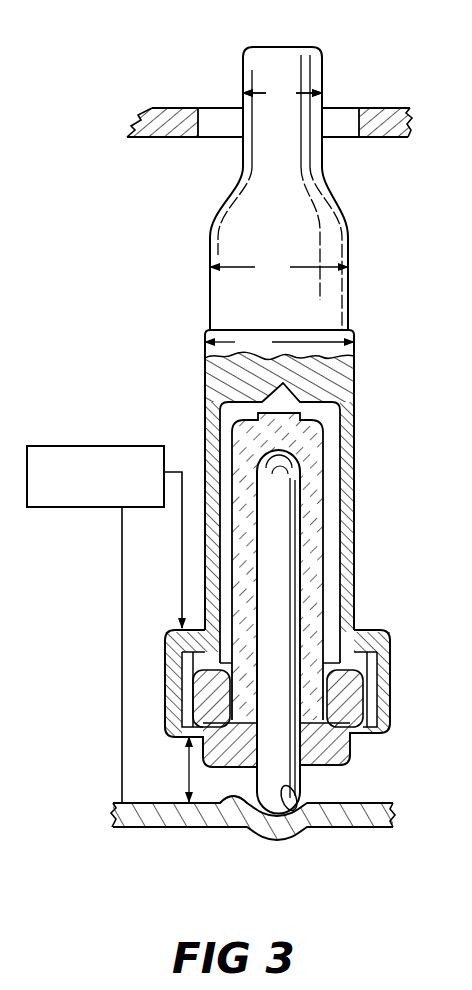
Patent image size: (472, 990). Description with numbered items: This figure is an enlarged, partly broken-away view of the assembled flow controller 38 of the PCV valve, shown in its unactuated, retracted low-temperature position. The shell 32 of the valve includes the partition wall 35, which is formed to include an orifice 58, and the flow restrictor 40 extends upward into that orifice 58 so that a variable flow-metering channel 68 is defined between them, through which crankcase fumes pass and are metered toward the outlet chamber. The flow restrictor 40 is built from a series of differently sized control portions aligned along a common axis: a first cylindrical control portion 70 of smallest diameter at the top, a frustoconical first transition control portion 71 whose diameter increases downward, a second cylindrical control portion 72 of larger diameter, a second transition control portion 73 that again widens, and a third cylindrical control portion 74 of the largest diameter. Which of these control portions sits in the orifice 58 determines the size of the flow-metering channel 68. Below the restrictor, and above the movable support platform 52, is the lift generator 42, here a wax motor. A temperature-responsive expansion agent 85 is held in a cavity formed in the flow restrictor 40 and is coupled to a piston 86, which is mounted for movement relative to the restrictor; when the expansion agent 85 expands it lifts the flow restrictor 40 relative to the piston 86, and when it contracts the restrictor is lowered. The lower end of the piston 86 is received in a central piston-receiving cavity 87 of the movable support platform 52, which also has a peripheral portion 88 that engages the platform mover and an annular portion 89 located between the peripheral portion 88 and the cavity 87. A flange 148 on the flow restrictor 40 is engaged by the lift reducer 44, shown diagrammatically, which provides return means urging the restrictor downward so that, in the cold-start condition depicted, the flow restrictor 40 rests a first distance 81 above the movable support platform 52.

The shell 32 is at (163, 98).
The partition wall 35 is at (170, 128).
The variable flow-metering channel 68 is at (219, 124).
The orifice 58 is at (356, 118).
The first cylindrical control portion 70 is at (323, 72).
The first transition control portion 71 is at (334, 197).
The flow restrictor 40 is at (311, 183).
The second cylindrical control portion 72 is at (352, 296).
The second transition control portion 73 is at (355, 330).
The third cylindrical control portion 74 is at (308, 485).
The temperature-responsive expansion agent 85 is at (313, 458).
The piston 86 is at (278, 563).
The flange 148 is at (367, 630).
The lift generator 42 is at (305, 676).
The first distance 81 is at (187, 768).
The piston-receiving cavity 87 is at (298, 790).
The peripheral portion 88 is at (113, 802).
The annular portion 89 is at (247, 812).
The movable support platform 52 is at (235, 818).
The flow controller 38 is at (74, 444).
The lift reducer 44 is at (81, 509).